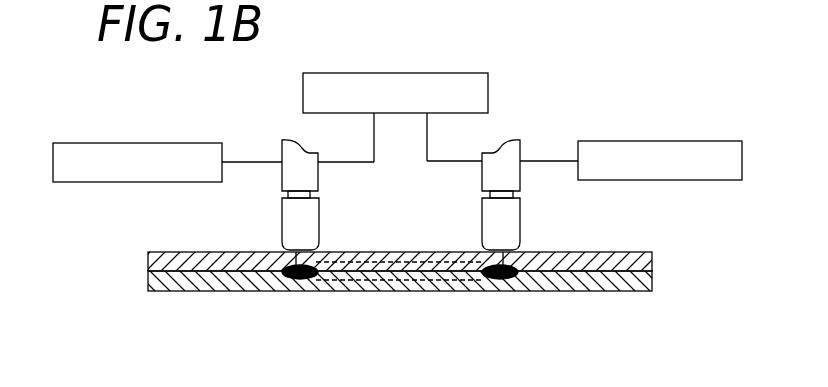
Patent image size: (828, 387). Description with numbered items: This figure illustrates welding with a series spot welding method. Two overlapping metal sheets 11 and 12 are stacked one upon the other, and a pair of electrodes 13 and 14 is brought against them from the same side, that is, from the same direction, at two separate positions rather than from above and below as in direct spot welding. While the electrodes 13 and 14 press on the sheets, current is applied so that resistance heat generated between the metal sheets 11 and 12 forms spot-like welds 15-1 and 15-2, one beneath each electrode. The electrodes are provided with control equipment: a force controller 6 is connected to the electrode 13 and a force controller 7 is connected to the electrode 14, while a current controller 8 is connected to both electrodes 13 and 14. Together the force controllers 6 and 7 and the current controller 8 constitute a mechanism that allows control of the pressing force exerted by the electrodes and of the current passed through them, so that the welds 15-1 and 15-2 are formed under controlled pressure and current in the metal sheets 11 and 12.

The force controller 6 is at (157, 143).
The force controller 7 is at (627, 141).
The current controller 8 is at (435, 73).
The metal sheet 11 is at (188, 260).
The metal sheet 12 is at (187, 282).
The electrode 13 is at (320, 218).
The electrode 14 is at (522, 219).
The spot-like weld 15-1 is at (287, 280).
The spot-like weld 15-2 is at (497, 280).